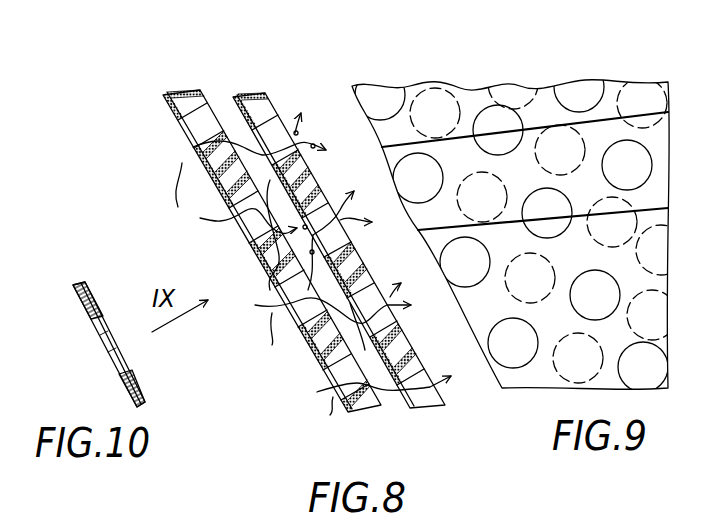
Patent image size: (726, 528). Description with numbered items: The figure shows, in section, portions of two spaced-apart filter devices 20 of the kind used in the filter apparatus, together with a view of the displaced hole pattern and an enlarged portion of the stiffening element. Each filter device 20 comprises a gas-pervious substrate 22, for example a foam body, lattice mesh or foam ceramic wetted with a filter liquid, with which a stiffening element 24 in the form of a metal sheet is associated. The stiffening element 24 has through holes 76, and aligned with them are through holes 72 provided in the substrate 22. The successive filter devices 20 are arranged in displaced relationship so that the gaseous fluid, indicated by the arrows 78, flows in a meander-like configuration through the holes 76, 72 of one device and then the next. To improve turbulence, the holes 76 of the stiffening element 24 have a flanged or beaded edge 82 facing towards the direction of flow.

In FIG. 8, the filter device 20 is at (246, 86).
In FIG. 9, the filter device 20 is at (550, 78).
In FIG. 8, the gas-pervious substrate 22 is at (195, 95).
In FIG. 9, the gas-pervious substrate 22 is at (612, 100).
In FIG. 8, the stiffening element 24 is at (228, 207).
In FIG. 10, the stiffening element 24 is at (139, 388).
In FIG. 8, the through holes 72 is at (200, 186).
In FIG. 9, the through holes 72 is at (483, 113).
In FIG. 8, the through holes 76 is at (193, 147).
In FIG. 10, the through holes 76 is at (105, 348).
In FIG. 8, the arrows 78 is at (313, 144).
In FIG. 10, the flanged or beaded edge 82 is at (80, 319).